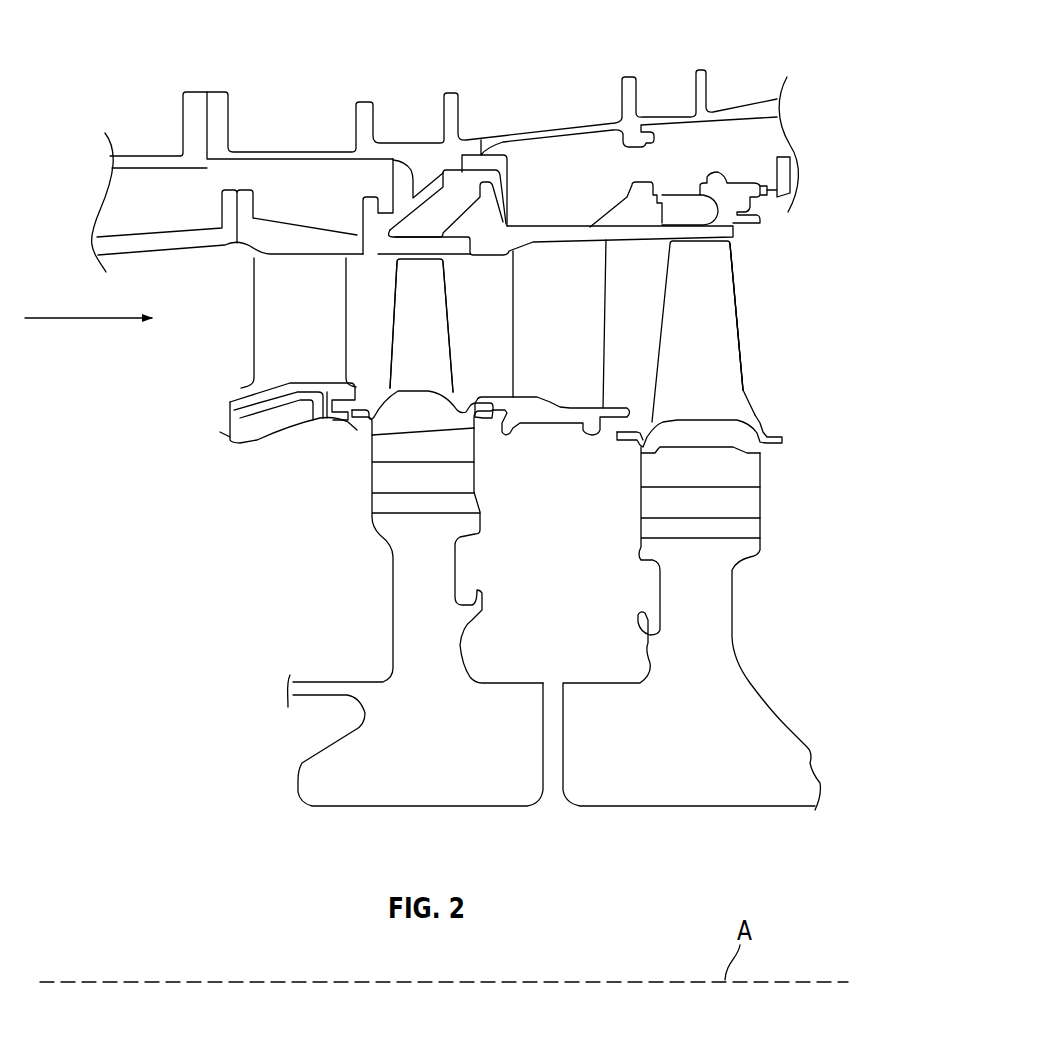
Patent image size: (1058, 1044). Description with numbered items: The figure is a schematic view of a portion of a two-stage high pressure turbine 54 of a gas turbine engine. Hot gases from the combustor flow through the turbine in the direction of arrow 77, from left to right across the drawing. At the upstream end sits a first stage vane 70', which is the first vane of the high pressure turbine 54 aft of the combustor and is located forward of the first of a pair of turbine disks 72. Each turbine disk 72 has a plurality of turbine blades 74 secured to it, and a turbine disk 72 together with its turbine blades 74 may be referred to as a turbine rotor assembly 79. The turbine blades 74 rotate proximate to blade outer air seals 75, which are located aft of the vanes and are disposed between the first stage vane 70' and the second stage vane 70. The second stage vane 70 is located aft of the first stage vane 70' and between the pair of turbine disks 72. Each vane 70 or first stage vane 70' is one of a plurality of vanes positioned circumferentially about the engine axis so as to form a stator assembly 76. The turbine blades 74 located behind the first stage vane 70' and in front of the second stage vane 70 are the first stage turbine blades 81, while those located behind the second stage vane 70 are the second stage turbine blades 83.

The high pressure turbine 54 is at (743, 42).
The stator assembly 76 is at (625, 174).
The blade outer air seals 75 is at (386, 252).
The turbine rotor assembly 79 is at (456, 305).
The high pressure turbine stage vane 70 is at (564, 337).
The first stage vane 70' is at (266, 350).
The second stage turbine blades 83 is at (748, 330).
The turbine blades 74 is at (433, 373).
The first stage turbine blades 81 is at (388, 371).
The turbine disks 72 is at (391, 673).
The arrow (hot gas flow direction) 77 is at (90, 320).